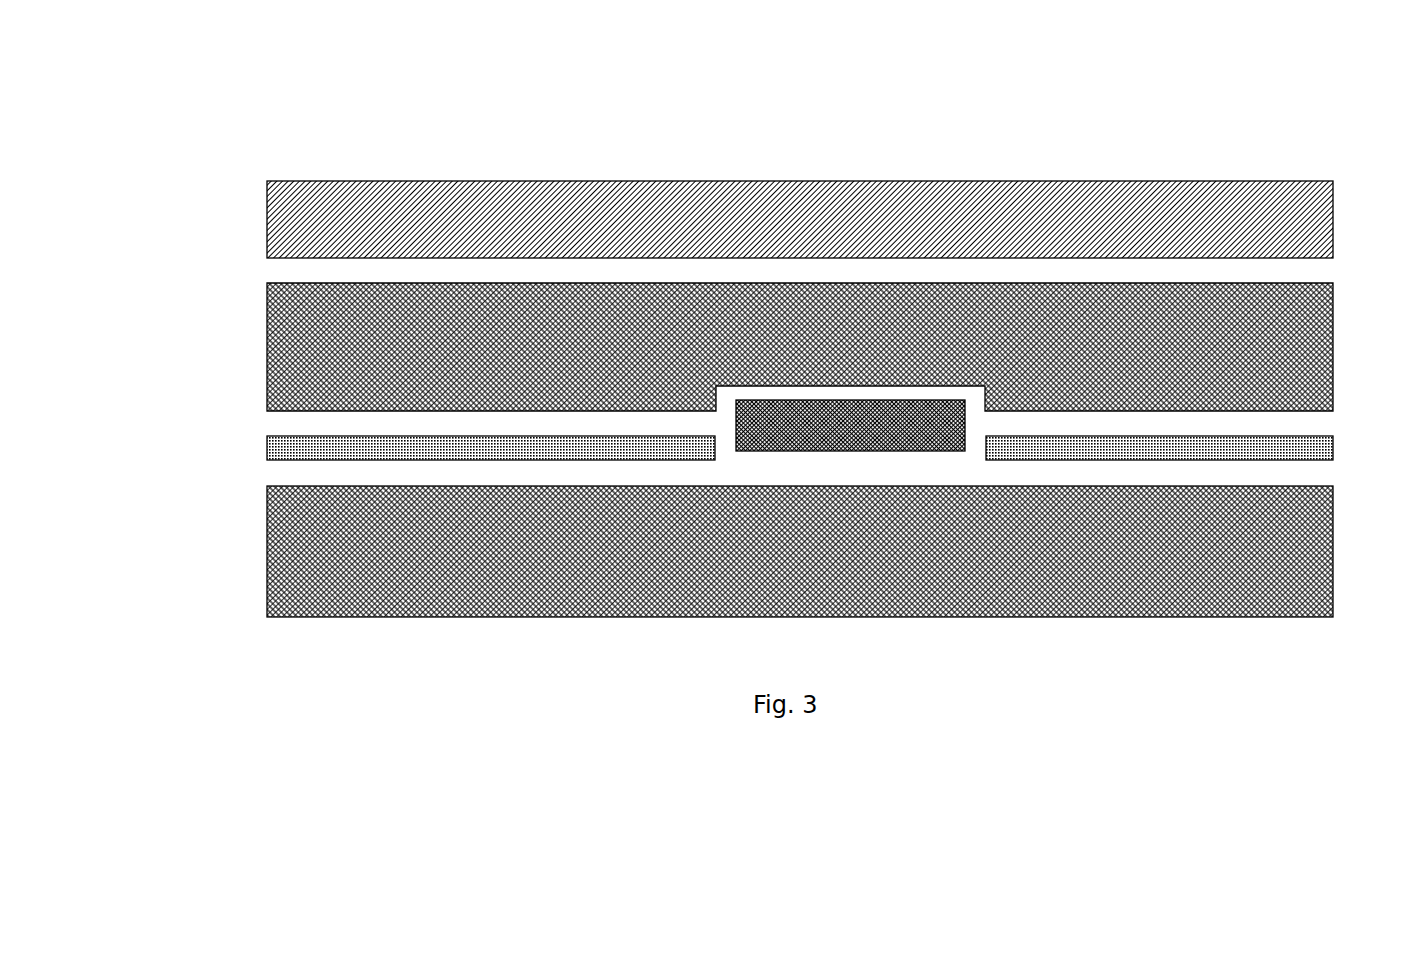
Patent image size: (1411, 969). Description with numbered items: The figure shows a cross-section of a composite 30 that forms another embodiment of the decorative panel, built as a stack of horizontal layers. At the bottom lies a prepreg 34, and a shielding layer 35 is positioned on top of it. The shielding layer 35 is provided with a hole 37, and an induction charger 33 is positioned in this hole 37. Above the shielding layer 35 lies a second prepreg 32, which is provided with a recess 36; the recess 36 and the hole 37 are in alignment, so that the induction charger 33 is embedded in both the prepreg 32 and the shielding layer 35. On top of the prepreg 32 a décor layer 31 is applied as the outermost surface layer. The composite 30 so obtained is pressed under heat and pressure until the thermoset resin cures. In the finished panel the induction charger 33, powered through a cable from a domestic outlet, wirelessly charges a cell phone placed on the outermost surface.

The composite 30 is at (785, 139).
The décor layer 31 is at (259, 208).
The prepreg 32 is at (259, 314).
The induction charger 33 is at (728, 380).
The prepreg 34 is at (260, 531).
The shielding layer 35 is at (1295, 441).
The recess 36 is at (968, 393).
The hole 37 is at (967, 455).